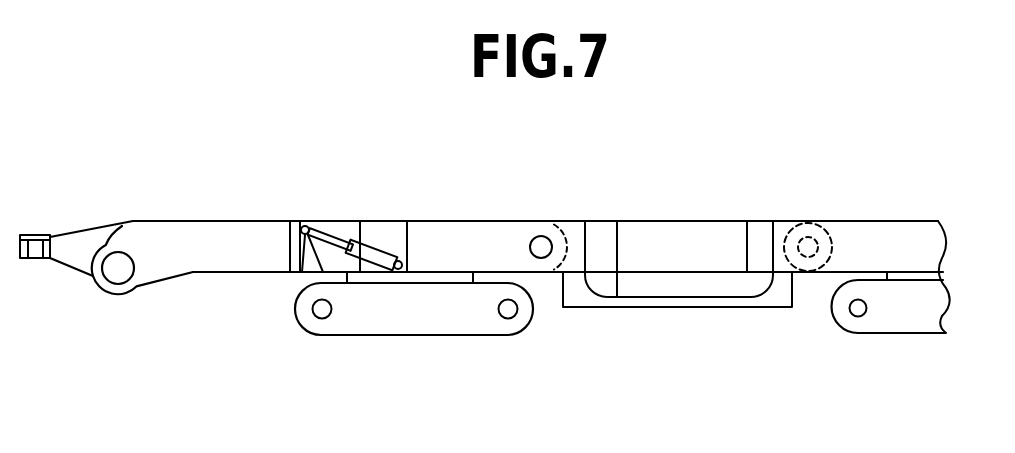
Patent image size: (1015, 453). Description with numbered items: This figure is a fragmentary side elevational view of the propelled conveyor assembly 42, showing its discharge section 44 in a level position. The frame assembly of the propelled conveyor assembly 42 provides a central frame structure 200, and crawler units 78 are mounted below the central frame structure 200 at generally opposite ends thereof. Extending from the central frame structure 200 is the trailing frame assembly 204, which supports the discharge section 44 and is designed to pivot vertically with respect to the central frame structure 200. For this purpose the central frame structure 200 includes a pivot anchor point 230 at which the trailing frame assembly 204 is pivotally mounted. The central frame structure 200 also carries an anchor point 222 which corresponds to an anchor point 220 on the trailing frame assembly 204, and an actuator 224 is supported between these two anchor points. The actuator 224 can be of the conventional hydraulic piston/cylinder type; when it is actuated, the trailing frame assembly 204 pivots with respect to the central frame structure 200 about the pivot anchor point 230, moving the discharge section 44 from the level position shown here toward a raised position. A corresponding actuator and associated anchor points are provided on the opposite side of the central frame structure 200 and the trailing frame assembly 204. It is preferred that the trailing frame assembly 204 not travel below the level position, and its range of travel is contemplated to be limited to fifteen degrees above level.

The propelled conveyor assembly 42 is at (905, 188).
The discharge section 44 is at (155, 221).
The crawler units 78 is at (375, 335).
The central frame structure 200 is at (782, 221).
The trailing frame assembly 204 is at (215, 221).
The anchor point 220 is at (305, 226).
The anchor point 222 is at (398, 261).
The actuator 224 is at (357, 253).
The pivot anchor point 230 is at (541, 236).